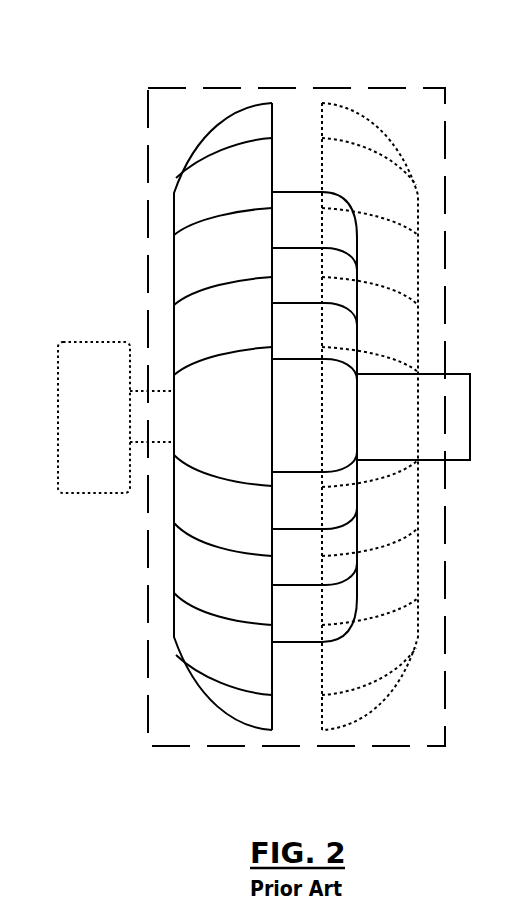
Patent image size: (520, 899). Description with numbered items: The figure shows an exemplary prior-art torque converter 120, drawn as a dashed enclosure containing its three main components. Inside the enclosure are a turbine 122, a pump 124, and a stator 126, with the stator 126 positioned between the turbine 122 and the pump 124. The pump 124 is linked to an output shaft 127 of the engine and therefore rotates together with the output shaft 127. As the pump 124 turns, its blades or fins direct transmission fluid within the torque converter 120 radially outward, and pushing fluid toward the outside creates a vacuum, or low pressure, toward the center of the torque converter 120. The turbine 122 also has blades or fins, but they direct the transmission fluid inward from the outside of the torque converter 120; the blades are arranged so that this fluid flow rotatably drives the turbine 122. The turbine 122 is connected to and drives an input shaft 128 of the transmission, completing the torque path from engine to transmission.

The torque converter 120 is at (305, 87).
The turbine 122 is at (207, 703).
The pump 124 is at (382, 706).
The stator 126 is at (292, 645).
The output shaft 127 is at (93, 493).
The input shaft 128 is at (455, 460).